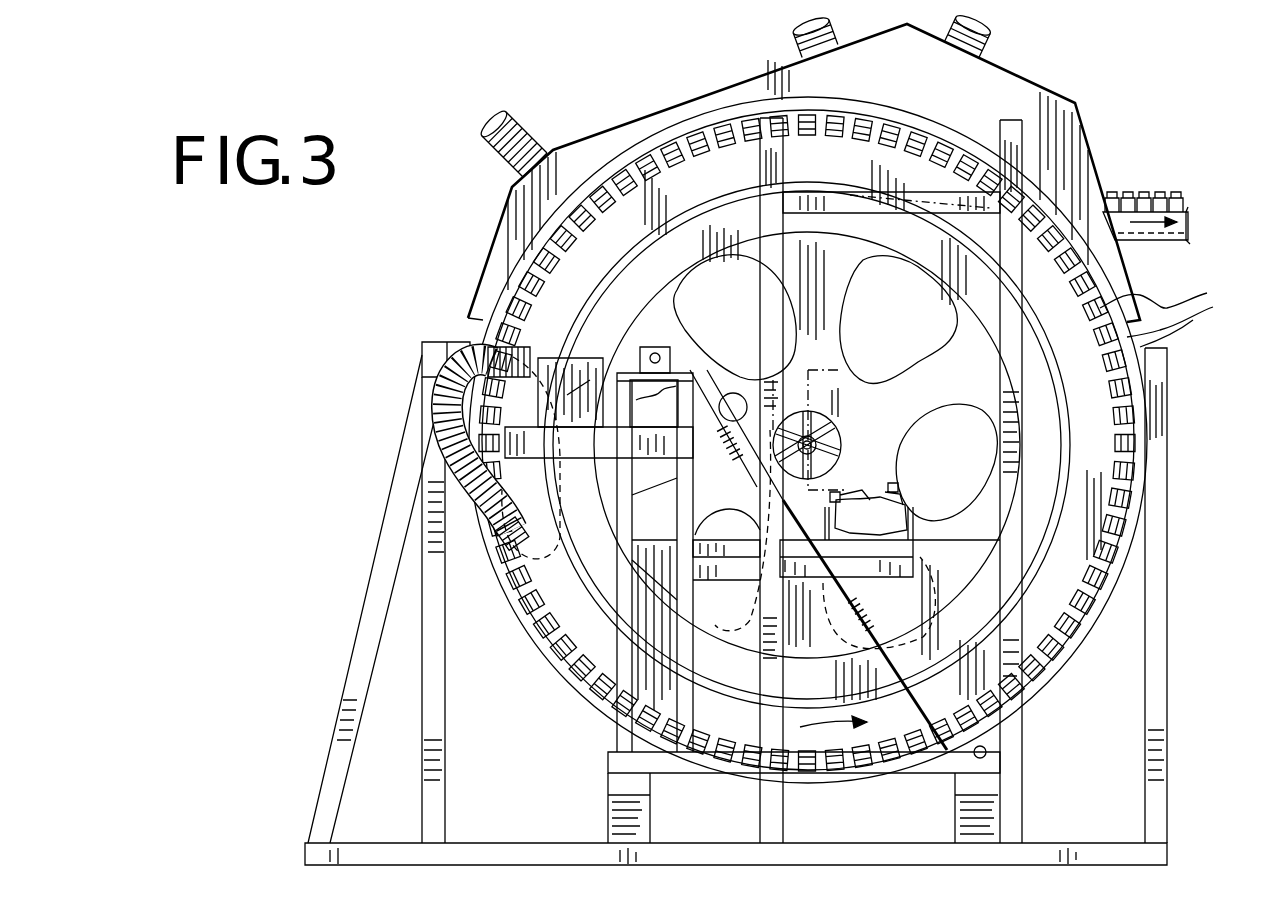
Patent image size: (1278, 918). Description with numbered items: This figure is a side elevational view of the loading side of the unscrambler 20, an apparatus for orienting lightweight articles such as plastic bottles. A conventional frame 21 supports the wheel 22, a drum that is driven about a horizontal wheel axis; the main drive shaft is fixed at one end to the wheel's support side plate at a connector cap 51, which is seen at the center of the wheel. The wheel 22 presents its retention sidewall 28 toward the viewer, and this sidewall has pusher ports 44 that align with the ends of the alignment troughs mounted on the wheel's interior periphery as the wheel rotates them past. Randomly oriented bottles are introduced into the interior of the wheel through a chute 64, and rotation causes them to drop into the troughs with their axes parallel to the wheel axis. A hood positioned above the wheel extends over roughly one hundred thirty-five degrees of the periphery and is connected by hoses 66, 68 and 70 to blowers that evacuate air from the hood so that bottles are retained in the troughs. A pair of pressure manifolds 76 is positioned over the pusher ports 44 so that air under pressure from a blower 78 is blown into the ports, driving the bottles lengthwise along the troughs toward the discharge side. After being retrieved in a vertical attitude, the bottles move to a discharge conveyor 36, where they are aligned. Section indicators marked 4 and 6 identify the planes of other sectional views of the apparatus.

The unscrambler 20 is at (1080, 118).
The frame 21 is at (345, 660).
The wheel 22 is at (1107, 612).
The retention sidewall 28 is at (957, 563).
The discharge conveyor 36 is at (1188, 220).
The pusher ports 44 is at (1172, 313).
The connector cap 51 is at (845, 437).
The chute 64 is at (917, 521).
The hose 66 is at (988, 40).
The hose 68 is at (800, 43).
The hose 70 is at (517, 124).
The pressure manifold 76 is at (468, 486).
The blower 78 is at (553, 368).
The section line 4- 4 is at (877, 15).
The section line 6- 6 is at (455, 497).